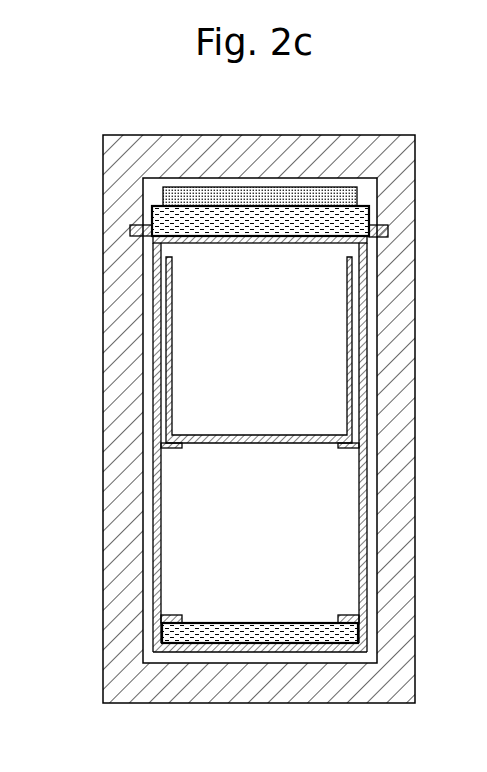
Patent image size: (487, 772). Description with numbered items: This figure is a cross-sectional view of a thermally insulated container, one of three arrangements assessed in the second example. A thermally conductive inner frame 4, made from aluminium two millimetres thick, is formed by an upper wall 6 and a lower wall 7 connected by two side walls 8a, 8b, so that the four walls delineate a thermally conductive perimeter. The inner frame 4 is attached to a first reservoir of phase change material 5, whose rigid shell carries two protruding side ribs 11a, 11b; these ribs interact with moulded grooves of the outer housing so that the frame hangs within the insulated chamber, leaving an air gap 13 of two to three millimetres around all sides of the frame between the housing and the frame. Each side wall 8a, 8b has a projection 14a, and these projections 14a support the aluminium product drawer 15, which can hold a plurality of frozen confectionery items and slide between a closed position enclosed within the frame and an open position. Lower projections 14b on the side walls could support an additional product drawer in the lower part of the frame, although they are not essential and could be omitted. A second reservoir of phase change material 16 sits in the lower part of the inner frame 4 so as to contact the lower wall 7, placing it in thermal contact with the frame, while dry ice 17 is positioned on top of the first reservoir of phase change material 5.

The thermally conductive inner frame 4 is at (157, 361).
The first reservoir of phase change material 5 is at (150, 208).
The upper wall 6 is at (318, 245).
The lower wall 7 is at (185, 653).
The side wall 8a is at (153, 558).
The side wall 8b is at (365, 557).
The protruding side rib 11a is at (140, 231).
The protruding side rib 11b is at (392, 228).
The air gap 13 is at (370, 323).
The projection 14a is at (347, 448).
The projection 14b is at (347, 612).
The product drawer 15 is at (275, 445).
The second reservoir of phase change material 16 is at (250, 615).
The dry ice 17 is at (194, 192).